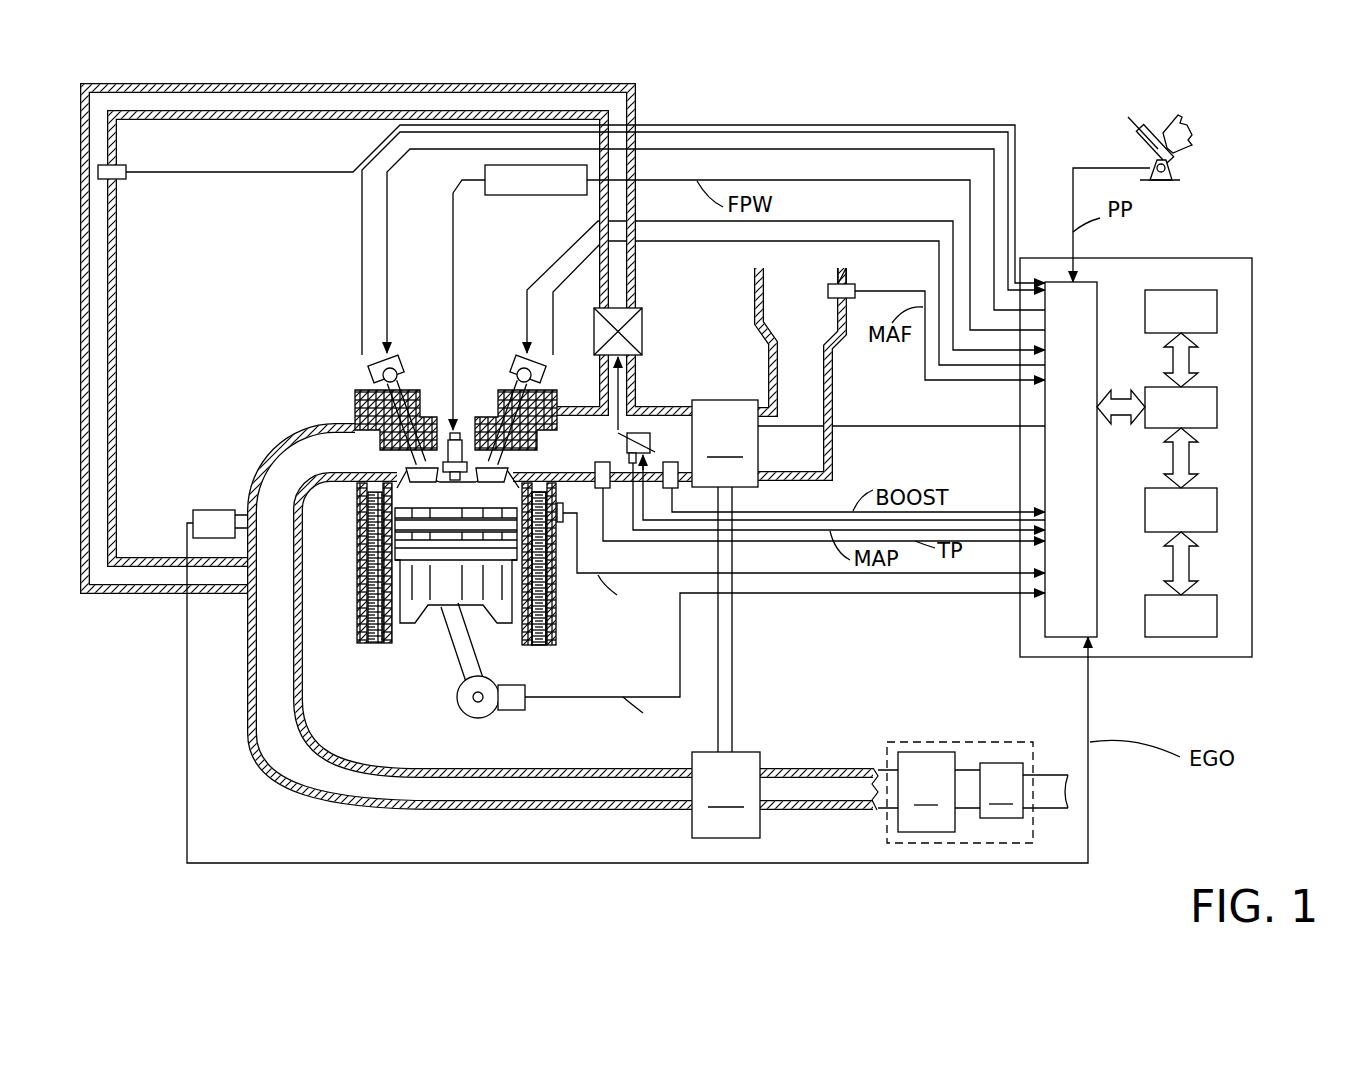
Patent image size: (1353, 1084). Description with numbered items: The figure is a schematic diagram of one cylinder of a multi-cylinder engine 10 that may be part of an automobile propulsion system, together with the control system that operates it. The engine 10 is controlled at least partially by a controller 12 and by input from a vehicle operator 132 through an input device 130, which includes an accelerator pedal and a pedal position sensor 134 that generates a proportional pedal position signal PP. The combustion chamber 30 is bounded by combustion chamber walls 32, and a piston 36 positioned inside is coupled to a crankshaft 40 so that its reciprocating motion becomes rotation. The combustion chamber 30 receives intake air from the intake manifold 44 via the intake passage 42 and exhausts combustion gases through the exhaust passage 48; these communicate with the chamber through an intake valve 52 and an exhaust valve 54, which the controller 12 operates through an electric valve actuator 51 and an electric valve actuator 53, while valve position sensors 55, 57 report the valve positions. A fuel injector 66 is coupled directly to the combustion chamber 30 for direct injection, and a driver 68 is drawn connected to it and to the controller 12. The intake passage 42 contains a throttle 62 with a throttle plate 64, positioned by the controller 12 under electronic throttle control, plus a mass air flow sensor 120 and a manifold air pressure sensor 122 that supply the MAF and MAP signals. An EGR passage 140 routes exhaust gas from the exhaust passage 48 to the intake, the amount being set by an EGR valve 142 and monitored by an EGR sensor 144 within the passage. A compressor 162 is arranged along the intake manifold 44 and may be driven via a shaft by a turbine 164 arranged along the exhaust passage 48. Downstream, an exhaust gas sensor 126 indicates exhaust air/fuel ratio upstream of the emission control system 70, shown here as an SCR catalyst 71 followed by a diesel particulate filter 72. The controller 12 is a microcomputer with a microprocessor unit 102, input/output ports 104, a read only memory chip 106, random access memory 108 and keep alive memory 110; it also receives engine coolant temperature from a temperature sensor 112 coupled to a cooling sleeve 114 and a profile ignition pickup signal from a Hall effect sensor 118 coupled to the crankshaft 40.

The engine 10 is at (630, 444).
The controller 12 is at (1182, 445).
The combustion chamber 30 is at (377, 573).
The combustion chamber walls 32 is at (400, 630).
The piston 36 is at (440, 593).
The crankshaft 40 is at (467, 713).
The intake passage 42 is at (786, 319).
The intake manifold 44 is at (586, 444).
The exhaust passage 48 is at (308, 463).
The electric valve actuator 51 is at (520, 358).
The intake valve 52 is at (500, 462).
The electric valve actuator 53 is at (392, 355).
The exhaust valve 54 is at (412, 468).
The valve position sensor 55 is at (540, 378).
The valve position sensor 57 is at (372, 368).
The throttle 62 is at (637, 432).
The throttle plate 64 is at (653, 450).
The fuel injector 66 is at (460, 433).
The ignition driver 68 is at (568, 196).
The emission control system 70 is at (973, 772).
The SCR catalyst 71 is at (926, 792).
The diesel particulate filter 72 is at (1001, 790).
The microprocessor unit 102 is at (1218, 402).
The input/output ports 104 is at (1097, 288).
The read only memory chip 106 is at (1218, 310).
The random access memory 108 is at (1218, 508).
The keep alive memory 110 is at (1218, 612).
The temperature sensor 112 is at (560, 523).
The cooling sleeve 114 is at (537, 595).
The Hall effect sensor 118 is at (512, 711).
The mass air flow sensor 120 is at (857, 283).
The manifold air pressure sensor 122 is at (598, 465).
The exhaust gas sensor 126 is at (193, 513).
The input device 130 is at (1194, 187).
The vehicle operator 132 is at (1193, 130).
The pedal position sensor 134 is at (1172, 168).
The EGR passage 140 is at (370, 87).
The EGR valve 142 is at (642, 325).
The EGR sensor 144 is at (112, 180).
The compressor 162 is at (725, 443).
The turbine 164 is at (726, 795).